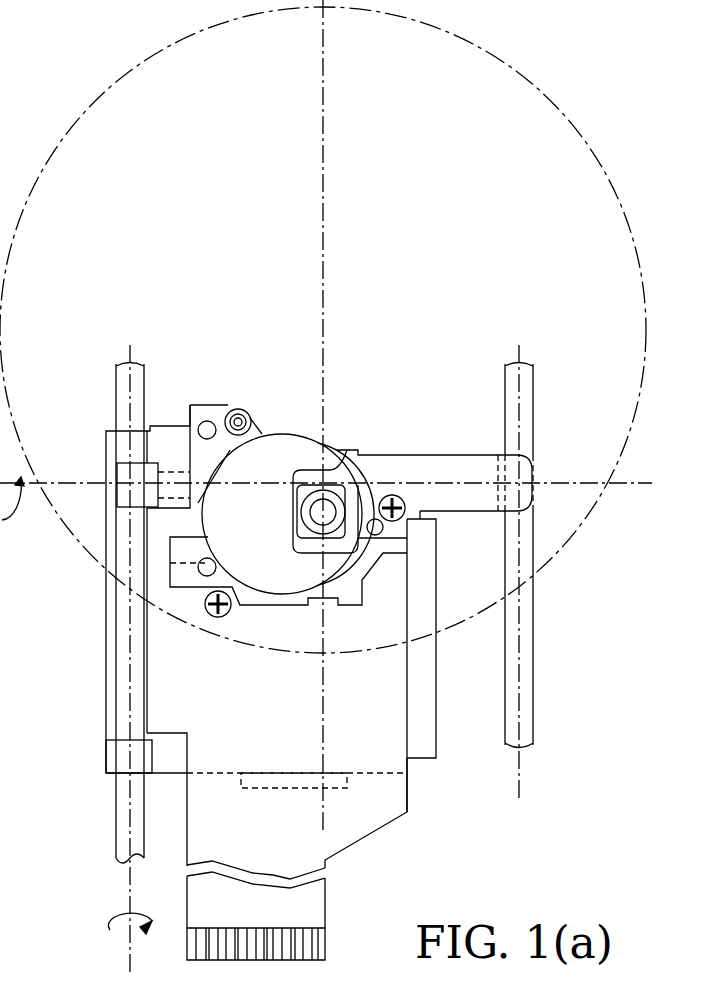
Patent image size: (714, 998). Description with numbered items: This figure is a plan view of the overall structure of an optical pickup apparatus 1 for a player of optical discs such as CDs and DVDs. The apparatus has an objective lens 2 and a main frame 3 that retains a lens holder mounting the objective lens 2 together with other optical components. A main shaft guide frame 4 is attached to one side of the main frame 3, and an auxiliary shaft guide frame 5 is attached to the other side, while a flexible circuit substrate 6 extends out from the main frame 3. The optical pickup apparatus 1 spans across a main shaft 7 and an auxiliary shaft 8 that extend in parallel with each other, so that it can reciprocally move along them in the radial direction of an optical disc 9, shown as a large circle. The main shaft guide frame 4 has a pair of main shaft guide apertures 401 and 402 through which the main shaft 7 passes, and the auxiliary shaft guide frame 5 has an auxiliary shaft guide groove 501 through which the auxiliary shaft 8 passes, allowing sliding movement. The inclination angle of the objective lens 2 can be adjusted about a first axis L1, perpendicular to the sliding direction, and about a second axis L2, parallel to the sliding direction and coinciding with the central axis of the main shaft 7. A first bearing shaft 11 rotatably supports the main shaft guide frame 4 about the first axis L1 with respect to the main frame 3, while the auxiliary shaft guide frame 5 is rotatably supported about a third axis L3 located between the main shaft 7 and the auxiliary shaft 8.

The optical pickup apparatus 1 is at (447, 667).
The objective lens 2 is at (327, 507).
The main frame 3 is at (348, 598).
The main shaft guide frame 4 is at (105, 632).
The main shaft guide aperture 401 is at (115, 757).
The main shaft guide aperture 402 is at (115, 450).
The auxiliary shaft guide frame 5 is at (458, 455).
The auxiliary shaft guide groove 501 is at (532, 478).
The flexible circuit substrate 6 is at (360, 828).
The main shaft 7 is at (117, 832).
The auxiliary shaft 8 is at (533, 693).
The optical disc 9 is at (469, 162).
The first bearing shaft 11 is at (173, 468).
The first axis L1 is at (557, 482).
The second axis L2 is at (128, 872).
The third axis L3 is at (395, 428).